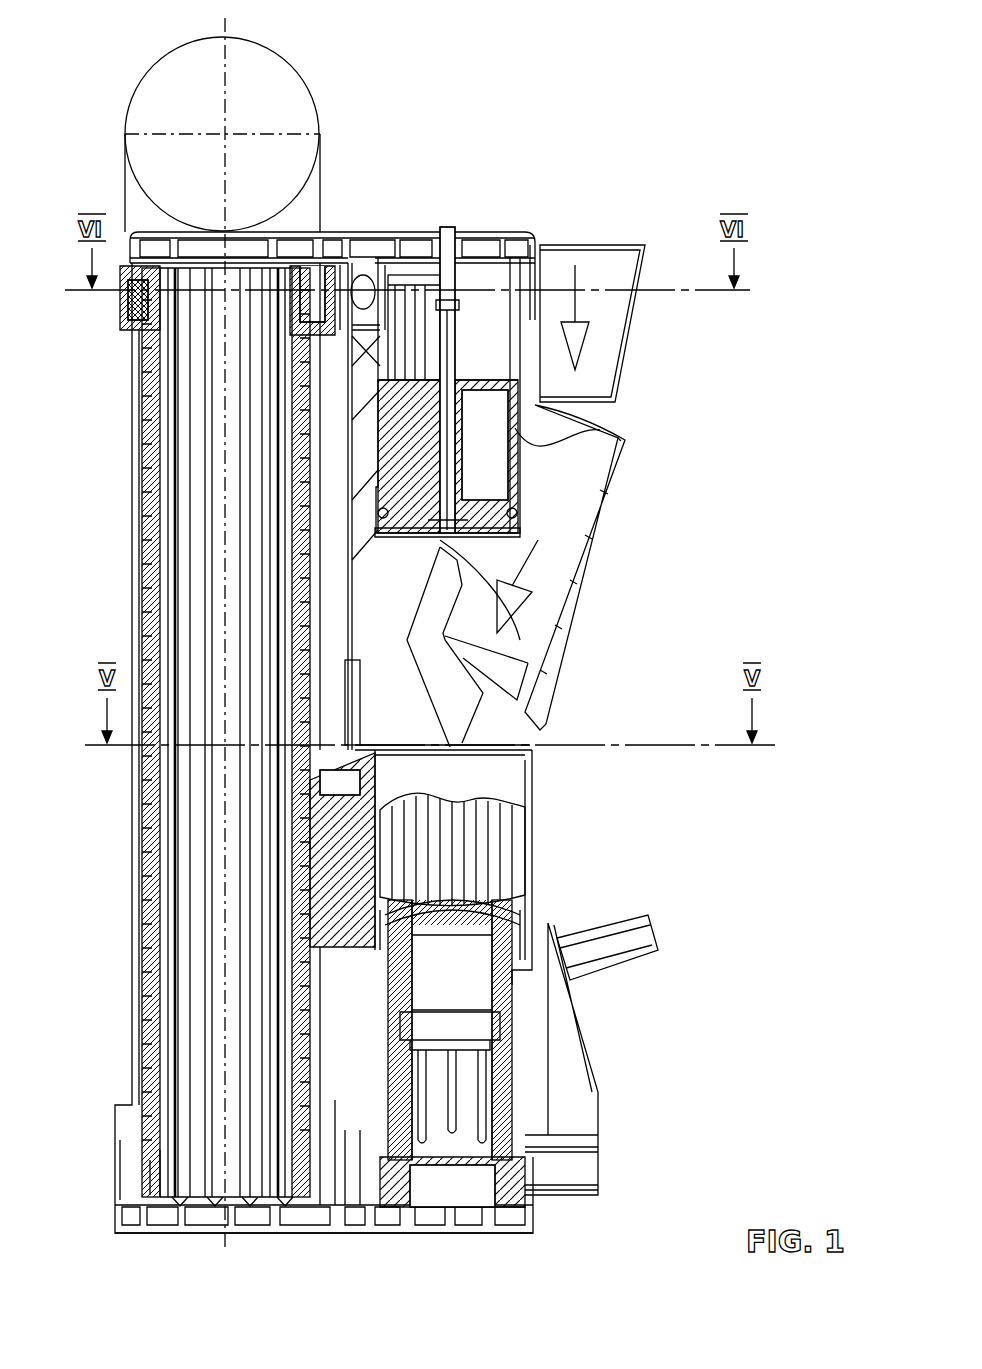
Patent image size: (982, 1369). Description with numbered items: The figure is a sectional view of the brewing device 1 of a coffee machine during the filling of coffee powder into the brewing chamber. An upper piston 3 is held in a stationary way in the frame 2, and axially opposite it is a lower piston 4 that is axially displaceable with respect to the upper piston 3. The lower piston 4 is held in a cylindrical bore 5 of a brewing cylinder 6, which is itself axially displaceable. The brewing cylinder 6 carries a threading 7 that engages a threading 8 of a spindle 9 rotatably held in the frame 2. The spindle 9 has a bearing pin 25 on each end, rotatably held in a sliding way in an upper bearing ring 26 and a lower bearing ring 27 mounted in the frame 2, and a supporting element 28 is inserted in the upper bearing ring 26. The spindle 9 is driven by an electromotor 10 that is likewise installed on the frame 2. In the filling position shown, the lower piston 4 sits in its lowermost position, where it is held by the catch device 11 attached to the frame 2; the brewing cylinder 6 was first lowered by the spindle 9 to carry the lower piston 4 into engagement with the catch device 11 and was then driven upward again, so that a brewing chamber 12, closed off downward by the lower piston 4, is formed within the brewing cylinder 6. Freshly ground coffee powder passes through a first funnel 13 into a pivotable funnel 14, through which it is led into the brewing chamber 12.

The brewing device 1 is at (645, 603).
The frame 2 is at (378, 243).
The upper piston 3 is at (490, 432).
The lower piston 4 is at (490, 990).
The cylindrical bore 5 is at (508, 770).
The brewing cylinder 6 is at (533, 852).
The threading 7 is at (335, 877).
The threading 8 is at (150, 527).
The spindle 9 is at (200, 778).
The electromotor 10 is at (283, 84).
The catch device 11 is at (526, 1072).
The brewing chamber 12 is at (500, 855).
The first funnel 13 is at (632, 308).
The pivotable funnel 14 is at (590, 512).
The bearing pin 25 is at (142, 344).
The upper bearing ring 26 is at (312, 280).
The lower bearing ring 27 is at (152, 1183).
The supporting element 28 is at (128, 296).